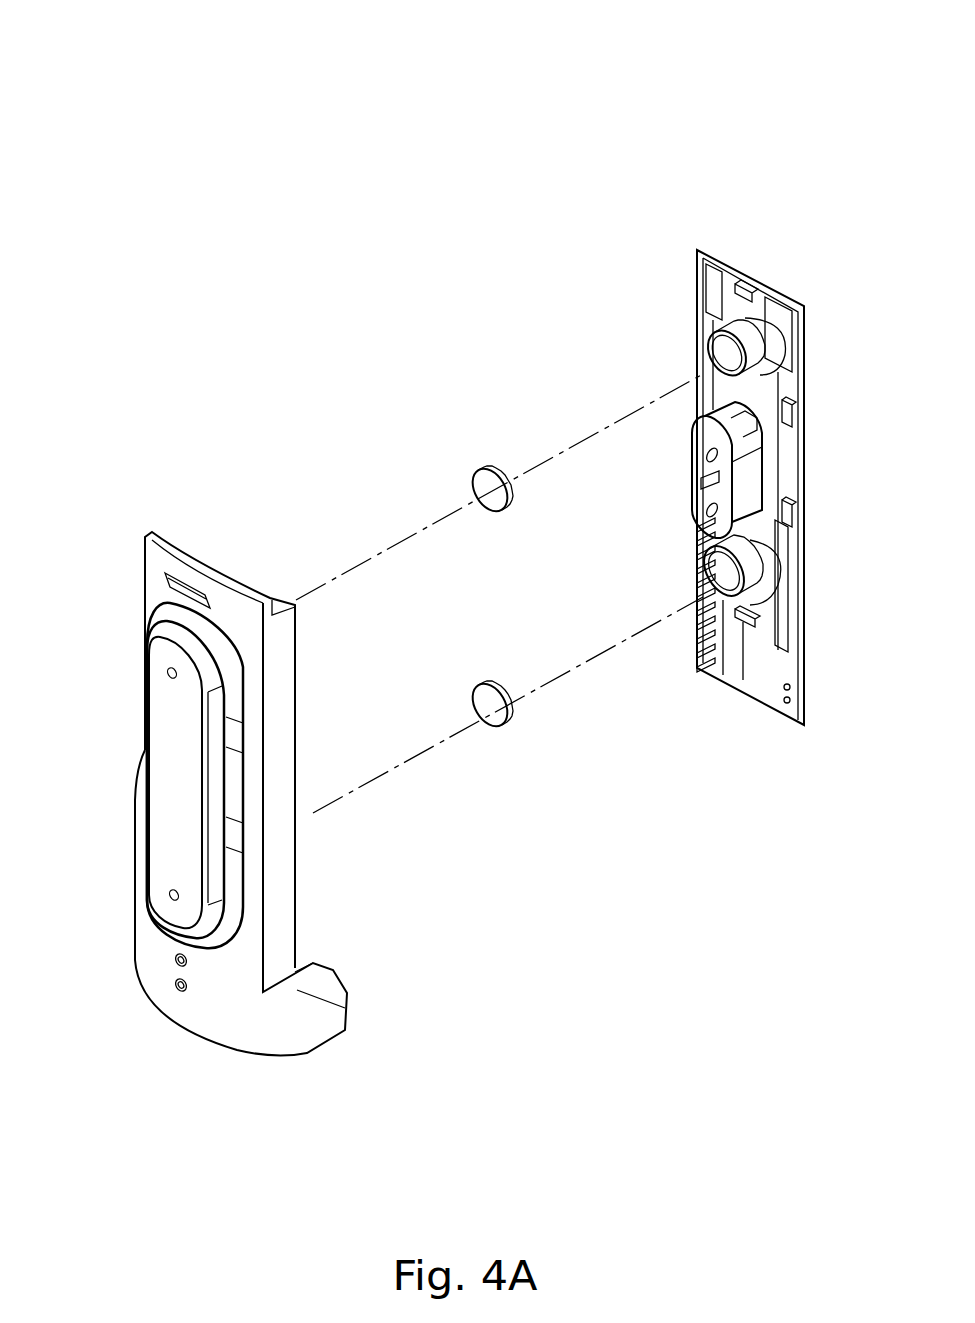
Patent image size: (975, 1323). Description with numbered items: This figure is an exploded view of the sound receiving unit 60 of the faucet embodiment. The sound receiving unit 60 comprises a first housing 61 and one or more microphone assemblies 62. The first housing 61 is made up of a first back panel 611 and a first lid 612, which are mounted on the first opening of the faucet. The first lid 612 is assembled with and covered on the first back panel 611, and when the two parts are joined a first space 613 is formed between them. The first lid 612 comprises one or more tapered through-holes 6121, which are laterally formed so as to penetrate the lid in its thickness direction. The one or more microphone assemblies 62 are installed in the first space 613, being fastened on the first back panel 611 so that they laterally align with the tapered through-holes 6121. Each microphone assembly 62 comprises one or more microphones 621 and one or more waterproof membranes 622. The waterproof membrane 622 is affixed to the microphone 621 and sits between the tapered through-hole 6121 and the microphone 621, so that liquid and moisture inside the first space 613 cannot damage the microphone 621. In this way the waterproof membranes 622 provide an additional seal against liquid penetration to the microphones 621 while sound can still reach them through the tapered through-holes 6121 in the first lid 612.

The sound receiving unit 60 is at (60, 40).
The first housing 61 is at (510, 260).
The first back panel 611 is at (707, 406).
The first lid 612 is at (243, 620).
The tapered through-hole 6121 is at (170, 676).
The first space 613 is at (488, 900).
The microphone assembly 62 is at (758, 828).
The microphone 621 is at (731, 578).
The waterproof membrane 622 is at (492, 718).